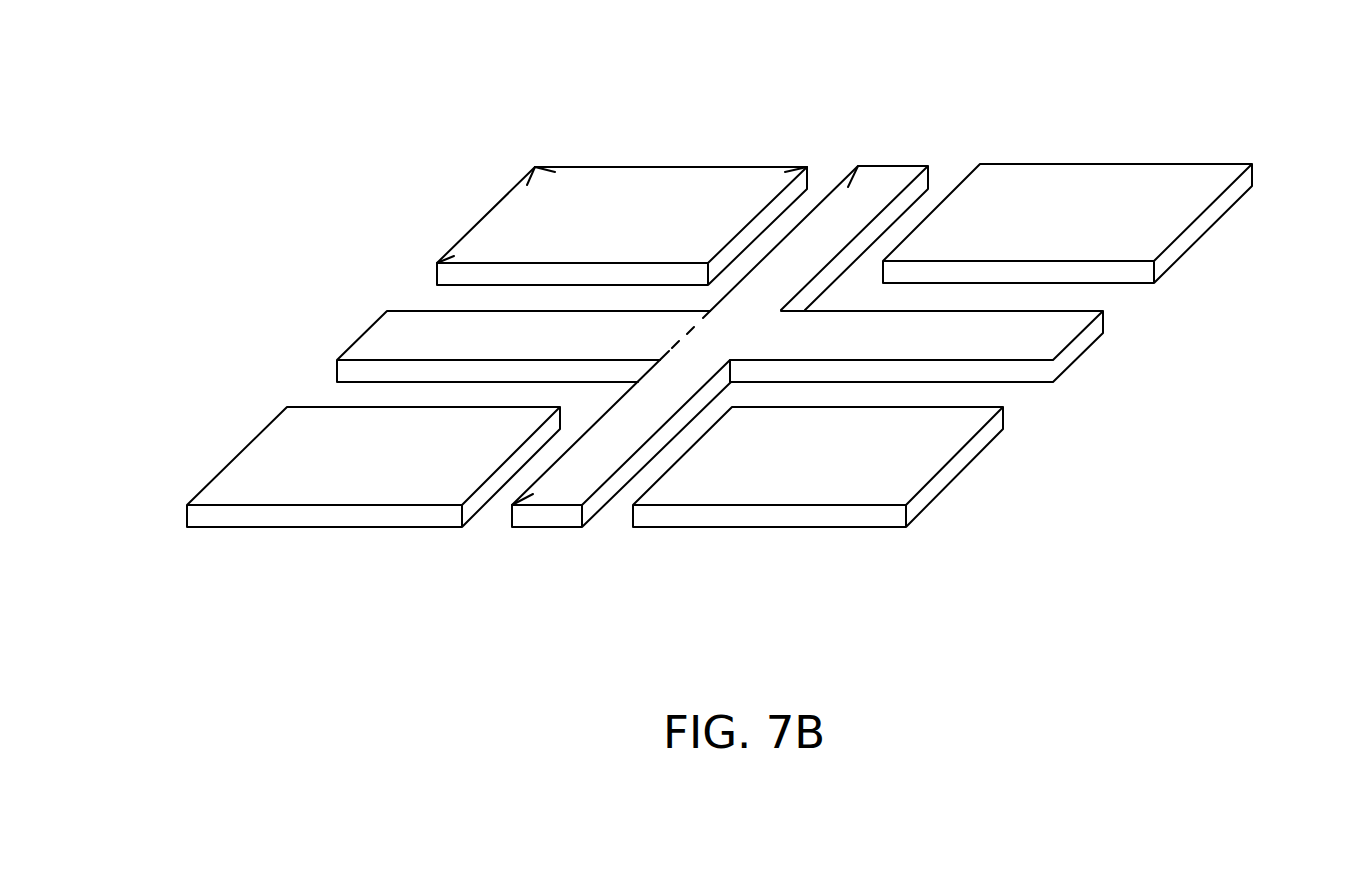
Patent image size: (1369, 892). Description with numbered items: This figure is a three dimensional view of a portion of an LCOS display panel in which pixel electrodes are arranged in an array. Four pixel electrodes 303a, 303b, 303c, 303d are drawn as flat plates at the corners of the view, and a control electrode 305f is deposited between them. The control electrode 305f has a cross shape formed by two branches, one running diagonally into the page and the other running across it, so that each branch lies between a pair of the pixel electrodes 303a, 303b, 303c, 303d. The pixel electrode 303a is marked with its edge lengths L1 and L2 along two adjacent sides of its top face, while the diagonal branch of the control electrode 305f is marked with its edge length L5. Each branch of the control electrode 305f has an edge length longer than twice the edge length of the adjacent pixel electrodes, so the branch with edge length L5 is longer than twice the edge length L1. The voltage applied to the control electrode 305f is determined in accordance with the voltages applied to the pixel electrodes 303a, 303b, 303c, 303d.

The pixel electrode 303a is at (616, 180).
The pixel electrode 303b is at (1190, 204).
The pixel electrode 303c is at (250, 453).
The pixel electrode 303d is at (942, 449).
The control electrode 305f is at (883, 173).
The edge length of pixel electrode L1 is at (486, 215).
The edge length of pixel electrode L2 is at (671, 183).
The edge length of control electrode branch L5 is at (685, 335).